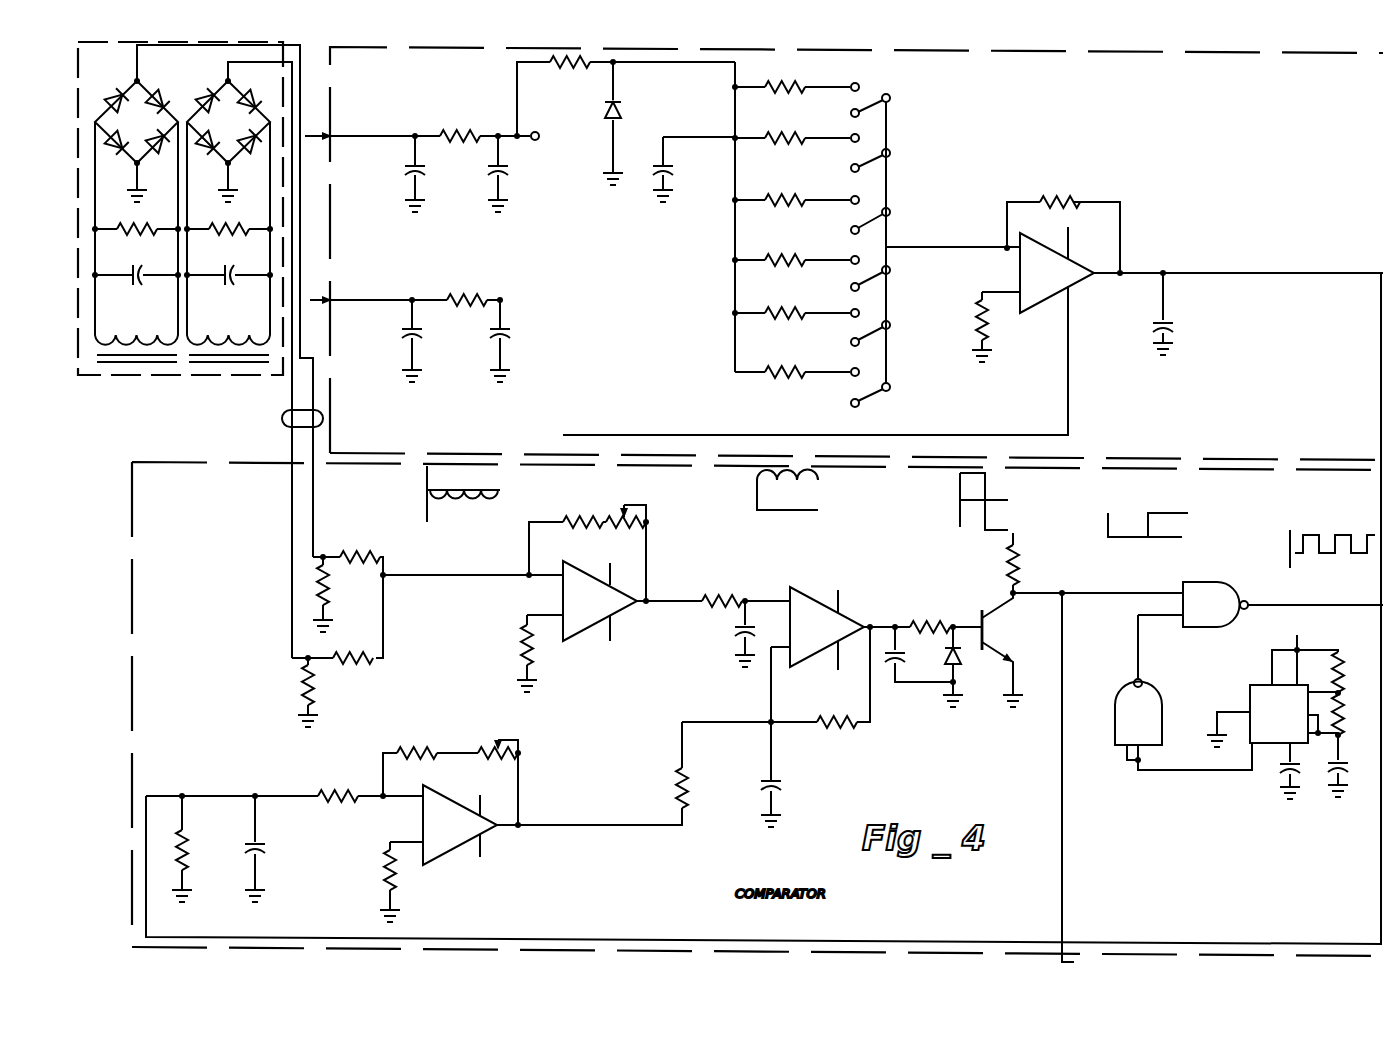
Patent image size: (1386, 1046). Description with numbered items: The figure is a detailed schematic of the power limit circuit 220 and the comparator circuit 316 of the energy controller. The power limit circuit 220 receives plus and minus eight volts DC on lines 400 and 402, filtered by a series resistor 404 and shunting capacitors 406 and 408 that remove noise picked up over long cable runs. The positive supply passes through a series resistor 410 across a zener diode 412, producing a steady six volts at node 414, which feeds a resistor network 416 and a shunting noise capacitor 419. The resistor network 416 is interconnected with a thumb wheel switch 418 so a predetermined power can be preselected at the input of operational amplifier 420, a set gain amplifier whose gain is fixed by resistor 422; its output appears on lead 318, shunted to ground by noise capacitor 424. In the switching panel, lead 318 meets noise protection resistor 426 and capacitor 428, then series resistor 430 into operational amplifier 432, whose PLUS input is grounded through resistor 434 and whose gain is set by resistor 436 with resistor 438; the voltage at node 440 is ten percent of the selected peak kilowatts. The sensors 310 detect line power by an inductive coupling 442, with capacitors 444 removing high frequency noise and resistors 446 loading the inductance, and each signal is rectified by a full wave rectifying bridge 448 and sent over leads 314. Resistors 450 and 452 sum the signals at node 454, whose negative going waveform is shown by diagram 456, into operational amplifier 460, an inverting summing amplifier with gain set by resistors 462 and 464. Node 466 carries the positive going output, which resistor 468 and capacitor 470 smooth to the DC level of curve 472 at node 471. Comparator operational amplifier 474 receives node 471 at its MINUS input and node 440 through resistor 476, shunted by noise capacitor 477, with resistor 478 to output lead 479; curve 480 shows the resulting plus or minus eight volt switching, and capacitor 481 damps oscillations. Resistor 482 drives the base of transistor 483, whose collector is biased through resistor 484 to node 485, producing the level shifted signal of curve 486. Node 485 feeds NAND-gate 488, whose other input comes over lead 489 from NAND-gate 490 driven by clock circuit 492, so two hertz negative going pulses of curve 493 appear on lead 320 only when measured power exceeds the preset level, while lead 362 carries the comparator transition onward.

The power limit circuit 220 is at (1306, 106).
The sensors 310 is at (78, 330).
The leads 314 is at (282, 420).
The comparator circuit 316 is at (1276, 890).
The lead 318 is at (1380, 458).
The lead 320 is at (1348, 610).
The lead 362 is at (1062, 912).
The line 400 is at (330, 134).
The line 402 is at (330, 300).
The series resistor 404 is at (454, 126).
The shunting capacitor 406 is at (406, 178).
The shunting capacitor 408 is at (516, 172).
The series resistor 410 is at (580, 74).
The zener diode 412 is at (622, 110).
The node 414 is at (613, 62).
The resistor network 416 is at (776, 86).
The thumb wheel switch 418 is at (888, 96).
The shunting noise capacitor 419 is at (669, 172).
The operational amplifier 420 is at (1073, 282).
The resistor 422 is at (1053, 200).
The noise capacitor 424 is at (1156, 326).
The noise protection resistor 426 is at (185, 850).
The capacitor 428 is at (258, 850).
The series resistor 430 is at (318, 790).
The operational amplifier 432 is at (446, 854).
The resistor 434 is at (394, 883).
The resistor 436 is at (520, 758).
The resistor 438 is at (414, 748).
The node 440 is at (520, 828).
The inductive coupling 442 is at (208, 378).
The capacitors 444 is at (210, 276).
The resistors 446 is at (120, 227).
The full wave rectifying bridge 448 is at (145, 103).
The resistor 450 is at (304, 682).
The resistor 452 is at (354, 650).
The node 454 is at (419, 490).
The diagram 456 is at (444, 479).
The operational amplifier 460 is at (585, 628).
The resistor 462 is at (572, 518).
The resistor 464 is at (624, 504).
The node 466 is at (650, 604).
The resistor 468 is at (704, 598).
The capacitor 470 is at (734, 632).
The node 471 is at (745, 600).
The curve 472 is at (747, 497).
The comparator operational amplifier 474 is at (807, 592).
The resistor 476 is at (678, 784).
The noise capacitor 477 is at (762, 782).
The resistor 478 is at (824, 724).
The output lead 479 is at (882, 622).
The curve 480 is at (957, 518).
The capacitor 481 is at (896, 674).
The resistor 482 is at (917, 608).
The transistor 483 is at (994, 641).
The resistor 484 is at (1016, 566).
The node 485 is at (1062, 592).
The curve 486 is at (1110, 552).
The NAND-gate 488 is at (1204, 582).
The lead 489 is at (1138, 666).
The NAND-gate 490 is at (1140, 716).
The clock circuit 492 is at (1268, 745).
The curve 493 is at (1296, 607).